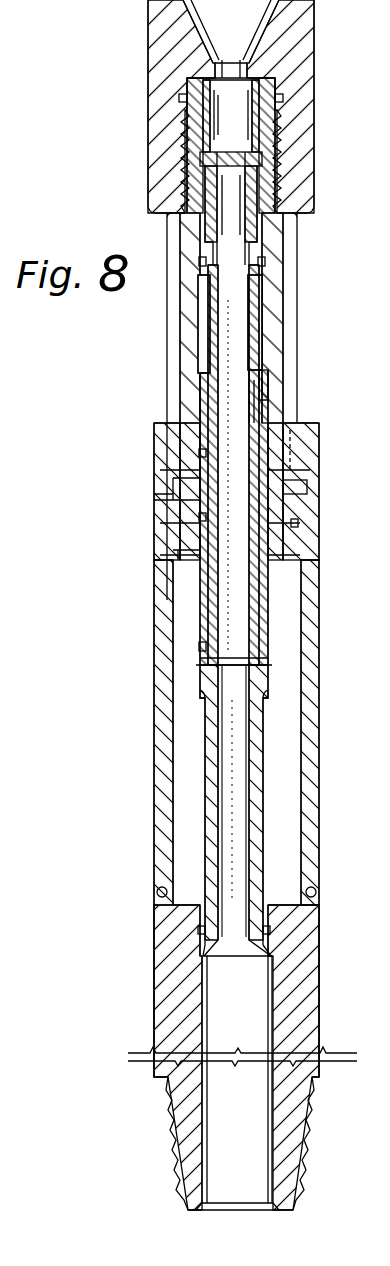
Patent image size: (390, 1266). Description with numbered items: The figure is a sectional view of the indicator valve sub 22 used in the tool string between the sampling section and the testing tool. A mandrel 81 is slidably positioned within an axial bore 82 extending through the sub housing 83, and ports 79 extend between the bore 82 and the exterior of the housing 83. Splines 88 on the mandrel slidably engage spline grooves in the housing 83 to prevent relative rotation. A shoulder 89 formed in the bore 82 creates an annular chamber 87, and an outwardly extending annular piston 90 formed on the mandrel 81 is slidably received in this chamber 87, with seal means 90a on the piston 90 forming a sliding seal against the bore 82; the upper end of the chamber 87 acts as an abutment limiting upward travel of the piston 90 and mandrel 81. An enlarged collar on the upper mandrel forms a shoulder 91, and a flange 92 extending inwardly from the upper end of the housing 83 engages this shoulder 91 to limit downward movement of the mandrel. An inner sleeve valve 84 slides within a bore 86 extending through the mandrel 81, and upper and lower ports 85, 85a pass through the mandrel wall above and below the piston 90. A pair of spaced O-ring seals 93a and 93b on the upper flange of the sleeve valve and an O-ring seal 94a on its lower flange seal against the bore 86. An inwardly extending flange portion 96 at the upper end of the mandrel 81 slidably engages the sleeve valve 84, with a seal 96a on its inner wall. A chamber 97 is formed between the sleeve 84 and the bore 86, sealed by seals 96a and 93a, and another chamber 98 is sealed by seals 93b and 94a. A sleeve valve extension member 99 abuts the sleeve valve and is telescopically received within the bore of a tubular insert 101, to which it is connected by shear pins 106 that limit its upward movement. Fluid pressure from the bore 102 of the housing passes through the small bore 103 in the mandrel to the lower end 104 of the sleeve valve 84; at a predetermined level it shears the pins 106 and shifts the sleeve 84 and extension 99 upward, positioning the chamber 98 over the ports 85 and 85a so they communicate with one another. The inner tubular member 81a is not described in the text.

The indicator valve sub 22 is at (332, 507).
The ports 79 is at (153, 498).
The mandrel 81 is at (270, 234).
The inner tubular member 81a is at (267, 760).
The axial bore 82 is at (293, 713).
The sub housing 83 is at (310, 793).
The inner sleeve valve 84 is at (257, 403).
The upper port 85 is at (178, 483).
The lower port 85a is at (183, 555).
The mandrel bore 86 is at (262, 385).
The annular chamber 87 is at (178, 783).
The splines 88 is at (167, 322).
The shoulder 89 is at (287, 887).
The annular piston 90 is at (317, 487).
The seal means 90a is at (298, 525).
The shoulder 91 is at (303, 220).
The flange 92 is at (292, 423).
The O-ring seal 93a is at (199, 453).
The O-ring seal 93b is at (199, 517).
The O-ring seal 94a is at (199, 647).
The inwardly extending flange portion 96 is at (258, 262).
The seal 96a is at (199, 258).
The chamber 97 is at (262, 306).
The chamber 98 is at (207, 550).
The sleeve valve extension member 99 is at (255, 197).
The tubular insert 101 is at (253, 110).
The housing bore 102 is at (260, 1003).
The small bore 103 is at (243, 830).
The lower end of sleeve valve 104 is at (262, 673).
The shear pins 106 is at (258, 147).